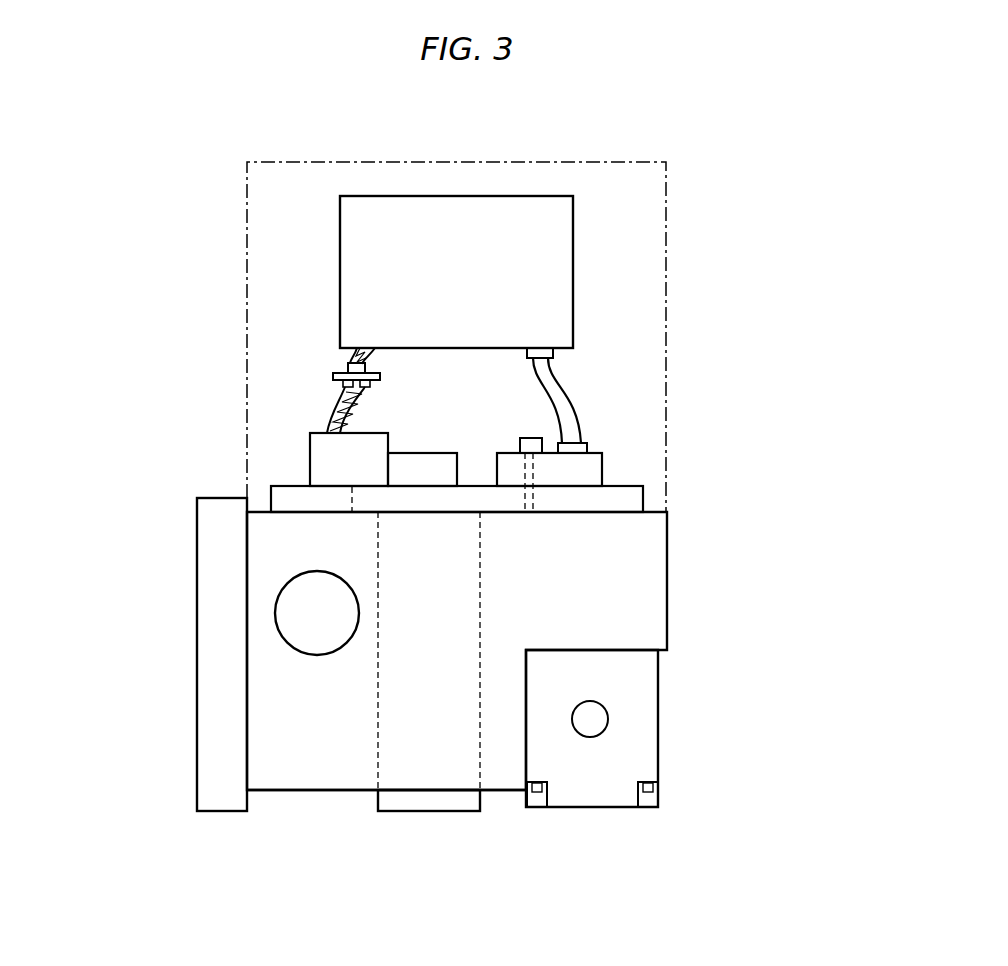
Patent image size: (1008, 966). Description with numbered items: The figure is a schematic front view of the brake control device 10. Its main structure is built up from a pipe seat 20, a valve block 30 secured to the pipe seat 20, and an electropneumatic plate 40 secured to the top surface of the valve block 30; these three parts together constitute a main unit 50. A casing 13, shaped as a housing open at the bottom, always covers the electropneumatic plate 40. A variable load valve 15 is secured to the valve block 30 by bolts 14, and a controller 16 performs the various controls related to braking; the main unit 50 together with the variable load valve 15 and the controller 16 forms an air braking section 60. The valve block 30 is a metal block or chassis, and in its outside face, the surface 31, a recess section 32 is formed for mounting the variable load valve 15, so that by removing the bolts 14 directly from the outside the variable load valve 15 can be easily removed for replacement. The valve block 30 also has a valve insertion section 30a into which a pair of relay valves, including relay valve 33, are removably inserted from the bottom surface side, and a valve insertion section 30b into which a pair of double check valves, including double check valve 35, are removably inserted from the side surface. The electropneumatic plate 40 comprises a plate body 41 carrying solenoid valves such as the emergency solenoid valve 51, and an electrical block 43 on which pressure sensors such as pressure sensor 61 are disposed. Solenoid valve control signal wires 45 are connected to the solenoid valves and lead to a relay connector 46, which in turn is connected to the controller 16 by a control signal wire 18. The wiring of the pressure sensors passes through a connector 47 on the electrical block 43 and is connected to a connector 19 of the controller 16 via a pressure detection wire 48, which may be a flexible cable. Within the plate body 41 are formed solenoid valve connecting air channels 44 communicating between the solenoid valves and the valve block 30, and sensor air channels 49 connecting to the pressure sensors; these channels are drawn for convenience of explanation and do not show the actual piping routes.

The brake control device 10 is at (778, 236).
The casing 13 is at (247, 228).
The bolts 14 is at (532, 807).
The variable load valve 15 is at (690, 745).
The controller 16 is at (573, 257).
The control signal wire 18 is at (377, 352).
The connector 19 is at (553, 352).
The pipe seat 20 is at (168, 744).
The valve block 30 is at (690, 600).
The valve insertion section 30a is at (378, 770).
The valve insertion section 30b is at (313, 570).
The surface 31 is at (667, 550).
The recess section 32 is at (605, 650).
The relay valve 33 is at (430, 797).
The double check valve 35 is at (275, 623).
The electropneumatic plate 40 is at (250, 483).
The plate body 41 is at (643, 496).
The electrical block 43 is at (602, 478).
The solenoid valve connecting air channels 44 is at (352, 498).
The solenoid valve control signal wires 45 is at (325, 416).
The relay connector 46 is at (333, 376).
The connector 47 is at (587, 447).
The pressure detection wire 48 is at (582, 396).
The sensor air channels 49 is at (527, 499).
The main unit 50 is at (148, 508).
The emergency solenoid valve 51 is at (314, 449).
The air braking section 60 is at (655, 305).
The pressure sensor 61 is at (528, 437).